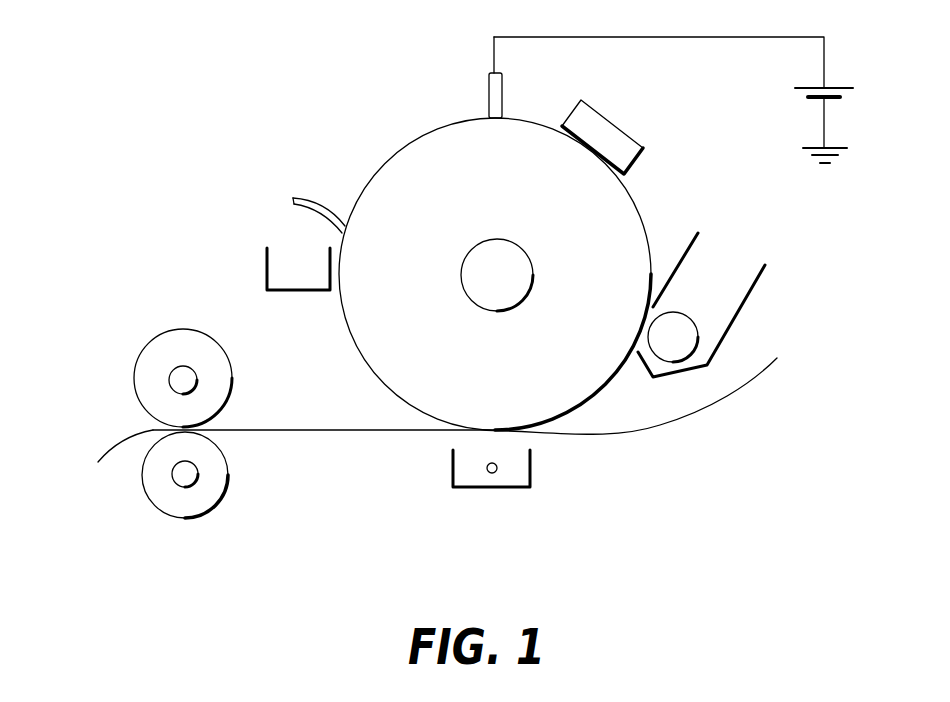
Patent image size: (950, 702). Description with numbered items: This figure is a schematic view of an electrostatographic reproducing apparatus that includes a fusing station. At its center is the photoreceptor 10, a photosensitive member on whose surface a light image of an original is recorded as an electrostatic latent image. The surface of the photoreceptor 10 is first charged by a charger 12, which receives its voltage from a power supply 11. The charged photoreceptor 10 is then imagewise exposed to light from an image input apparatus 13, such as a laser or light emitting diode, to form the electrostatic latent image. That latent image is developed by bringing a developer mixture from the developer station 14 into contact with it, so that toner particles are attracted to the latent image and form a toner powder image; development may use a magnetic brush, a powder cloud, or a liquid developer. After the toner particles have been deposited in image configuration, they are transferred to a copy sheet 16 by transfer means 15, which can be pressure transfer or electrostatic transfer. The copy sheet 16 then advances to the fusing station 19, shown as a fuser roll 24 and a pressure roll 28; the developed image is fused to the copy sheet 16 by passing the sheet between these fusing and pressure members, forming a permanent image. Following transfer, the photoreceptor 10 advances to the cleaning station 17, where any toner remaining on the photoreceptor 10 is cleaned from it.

The photoreceptor 10 is at (640, 205).
The power supply 11 is at (825, 74).
The charger 12 is at (489, 105).
The image input apparatus 13 is at (620, 130).
The developer station 14 is at (716, 272).
The transfer means 15 is at (532, 460).
The copy sheet 16 is at (724, 398).
The cleaning station 17 is at (276, 217).
The fusing station 19 is at (153, 430).
The fuser roll 24 is at (220, 372).
The pressure roll 28 is at (172, 507).